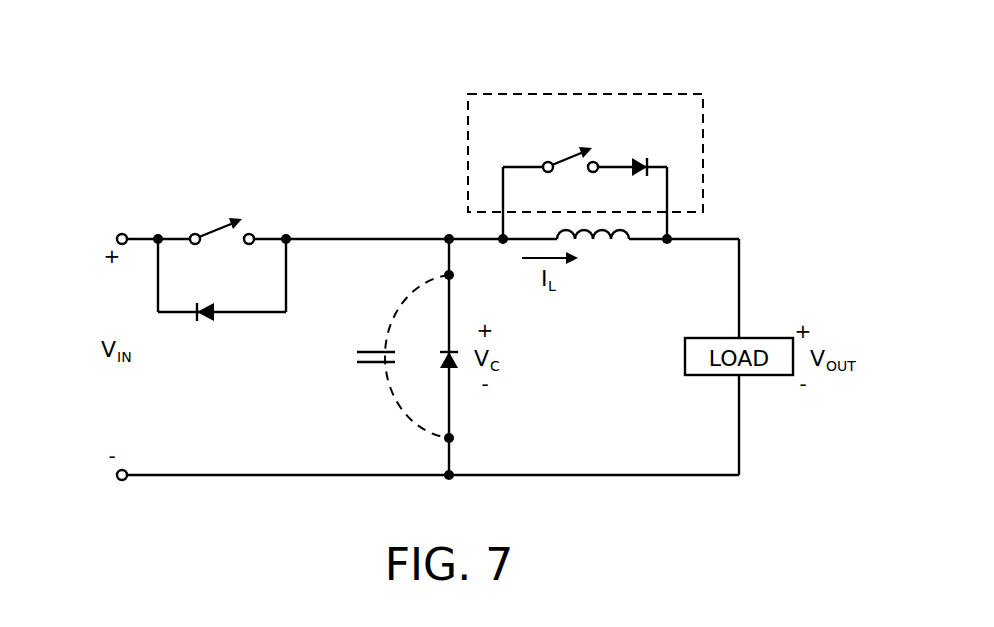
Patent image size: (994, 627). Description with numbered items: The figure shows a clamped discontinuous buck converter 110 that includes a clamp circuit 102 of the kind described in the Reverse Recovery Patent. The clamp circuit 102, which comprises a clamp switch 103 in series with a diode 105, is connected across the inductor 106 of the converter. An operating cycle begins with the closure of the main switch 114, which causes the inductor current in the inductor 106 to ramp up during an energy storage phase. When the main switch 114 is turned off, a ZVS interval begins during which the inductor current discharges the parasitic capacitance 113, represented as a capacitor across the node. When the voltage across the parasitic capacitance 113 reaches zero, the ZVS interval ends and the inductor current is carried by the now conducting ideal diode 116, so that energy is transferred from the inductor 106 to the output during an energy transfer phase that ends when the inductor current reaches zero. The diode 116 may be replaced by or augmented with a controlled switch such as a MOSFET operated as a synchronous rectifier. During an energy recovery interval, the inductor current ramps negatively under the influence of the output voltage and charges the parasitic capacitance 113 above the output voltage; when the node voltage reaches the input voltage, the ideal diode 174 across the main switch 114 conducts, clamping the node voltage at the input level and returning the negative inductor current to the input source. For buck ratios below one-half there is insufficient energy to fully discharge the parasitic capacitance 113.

The clamp circuit 102 is at (693, 101).
The clamp switch 103 is at (568, 158).
The diode 105 is at (641, 157).
The inductor 106 is at (620, 243).
The buck converter 110 is at (746, 143).
The parasitic capacitance 113 is at (370, 348).
The switch S1 114 is at (215, 226).
The diode 116 is at (443, 368).
The diode 174 is at (205, 320).